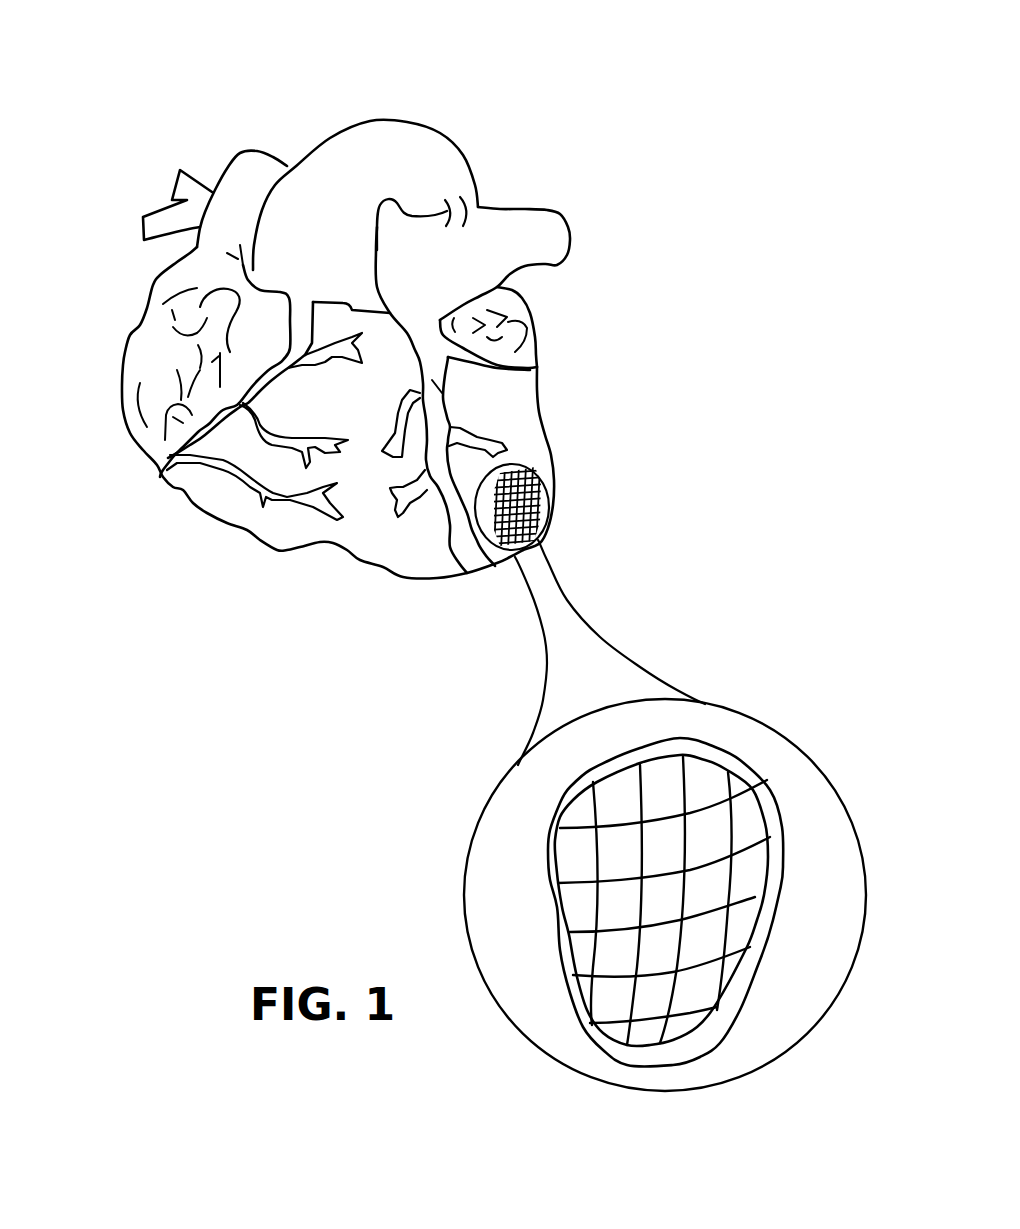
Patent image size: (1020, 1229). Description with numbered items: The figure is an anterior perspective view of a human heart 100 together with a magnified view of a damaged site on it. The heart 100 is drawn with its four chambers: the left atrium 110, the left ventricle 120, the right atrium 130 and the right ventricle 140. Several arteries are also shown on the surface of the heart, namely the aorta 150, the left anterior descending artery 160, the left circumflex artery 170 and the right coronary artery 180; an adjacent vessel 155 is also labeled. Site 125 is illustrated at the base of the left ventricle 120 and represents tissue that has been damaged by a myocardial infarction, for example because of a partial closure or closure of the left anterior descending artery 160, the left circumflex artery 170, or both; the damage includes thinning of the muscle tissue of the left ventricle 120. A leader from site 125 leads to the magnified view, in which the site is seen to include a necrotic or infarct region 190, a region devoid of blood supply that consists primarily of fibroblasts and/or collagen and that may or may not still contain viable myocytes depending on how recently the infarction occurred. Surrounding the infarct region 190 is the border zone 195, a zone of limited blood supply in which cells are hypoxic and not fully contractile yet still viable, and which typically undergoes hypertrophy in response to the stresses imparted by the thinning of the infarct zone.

The heart 100 is at (509, 92).
The left atrium 110 is at (510, 333).
The left ventricle 120 is at (540, 447).
The site 125 is at (552, 502).
The right atrium 130 is at (172, 284).
The right ventricle 140 is at (287, 528).
The aorta 150 is at (453, 166).
The pulmonary artery 155 is at (443, 316).
The left anterior descending artery 160 is at (447, 398).
The left circumflex artery 170 is at (533, 368).
The right coronary artery 180 is at (297, 340).
The infarct region 190 is at (753, 872).
The border zone 195 is at (767, 770).